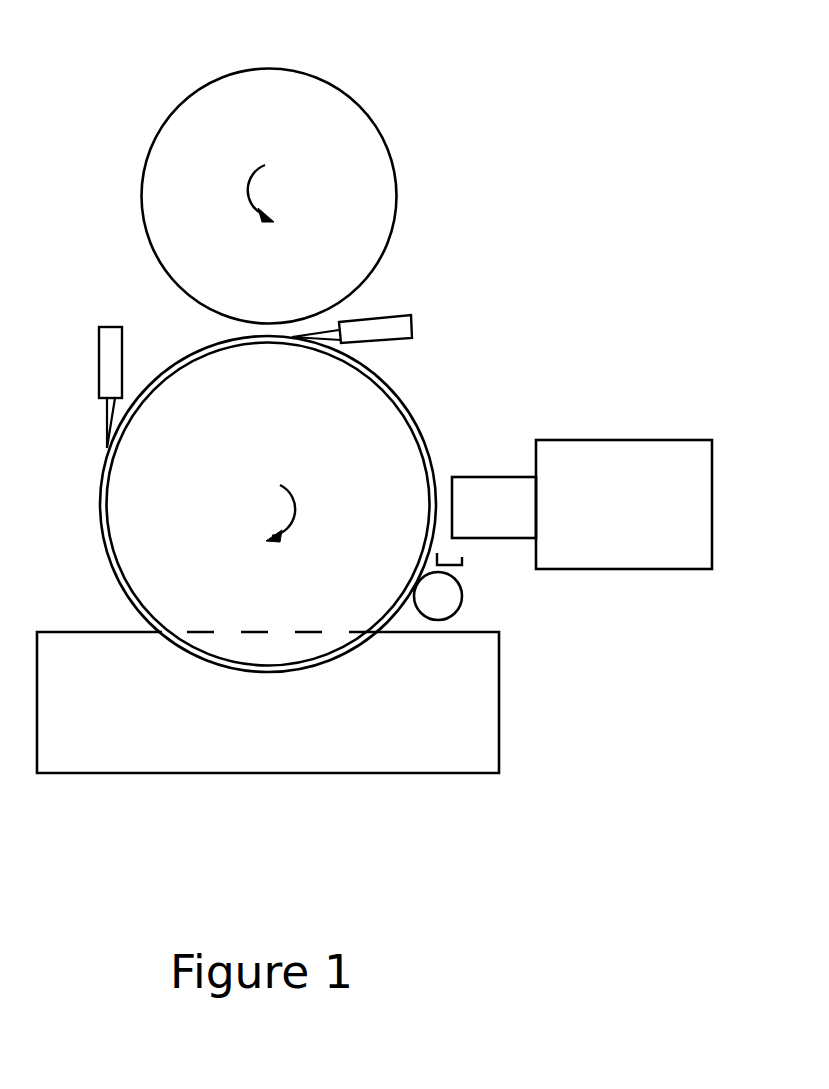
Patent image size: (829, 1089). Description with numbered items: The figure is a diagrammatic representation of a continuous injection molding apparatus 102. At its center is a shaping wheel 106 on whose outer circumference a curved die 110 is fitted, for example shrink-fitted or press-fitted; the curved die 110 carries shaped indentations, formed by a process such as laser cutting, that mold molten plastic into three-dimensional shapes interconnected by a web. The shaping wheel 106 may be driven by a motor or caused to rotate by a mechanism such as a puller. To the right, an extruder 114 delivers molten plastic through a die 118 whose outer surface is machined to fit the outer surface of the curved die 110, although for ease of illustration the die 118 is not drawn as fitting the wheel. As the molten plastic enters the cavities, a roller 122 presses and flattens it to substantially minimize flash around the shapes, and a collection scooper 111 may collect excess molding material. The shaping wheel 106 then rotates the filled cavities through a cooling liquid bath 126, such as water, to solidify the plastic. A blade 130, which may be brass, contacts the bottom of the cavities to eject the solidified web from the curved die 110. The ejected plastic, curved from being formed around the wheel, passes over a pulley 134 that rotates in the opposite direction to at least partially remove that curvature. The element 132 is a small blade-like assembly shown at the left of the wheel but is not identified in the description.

The continuous injection molding apparatus 102 is at (456, 69).
The shaping wheel 106 is at (378, 420).
The curved die 110 is at (378, 368).
The collection scooper 111 is at (463, 560).
The extruder 114 is at (652, 447).
The die 118 is at (507, 485).
The roller 122 is at (452, 592).
The cooling liquid bath 126 is at (489, 705).
The blade 130 is at (324, 333).
The blade assembly 132 is at (110, 387).
The pulley 134 is at (395, 175).